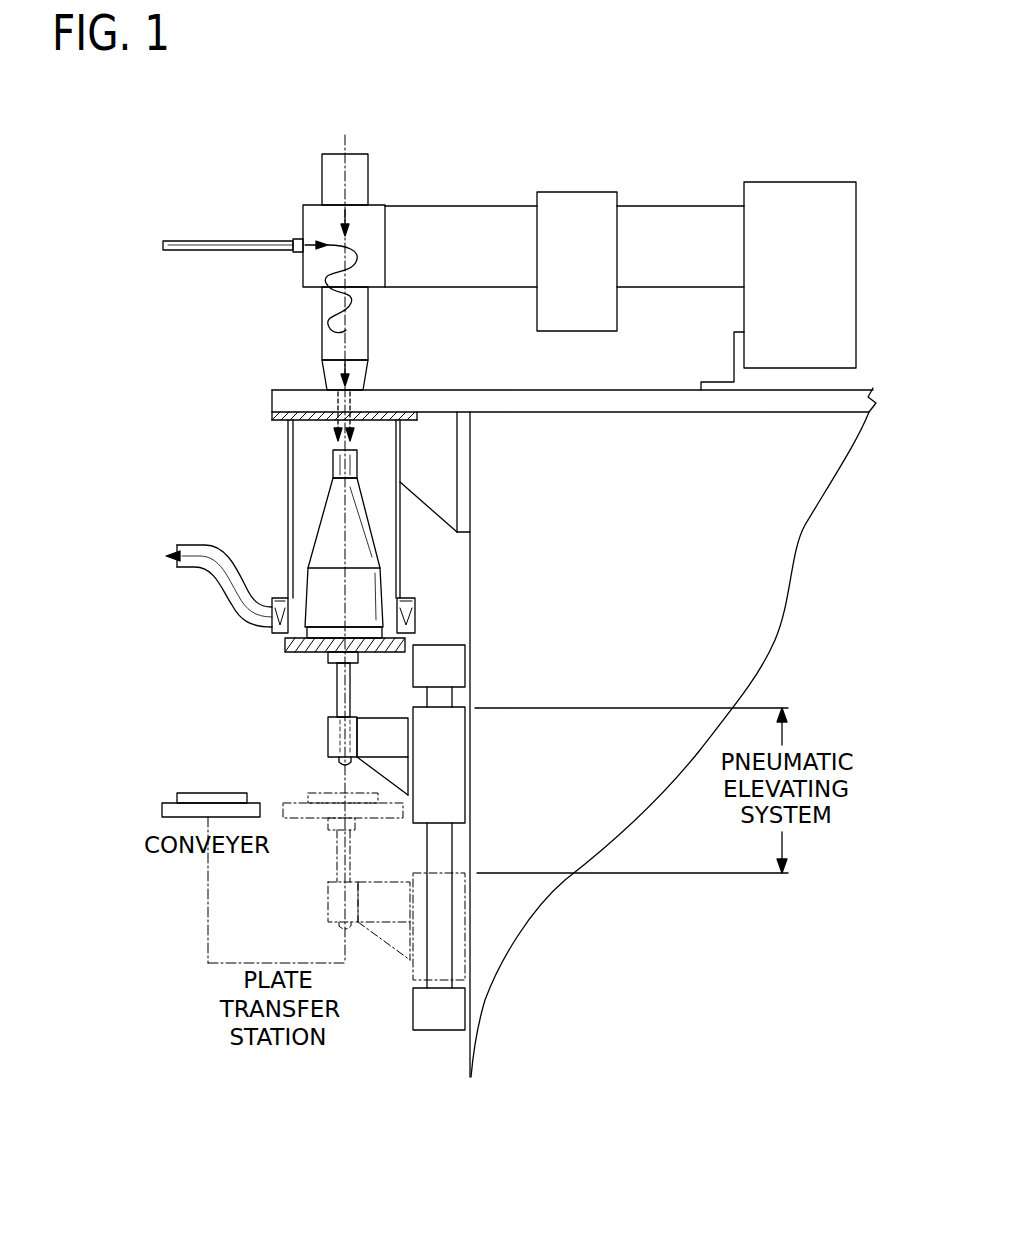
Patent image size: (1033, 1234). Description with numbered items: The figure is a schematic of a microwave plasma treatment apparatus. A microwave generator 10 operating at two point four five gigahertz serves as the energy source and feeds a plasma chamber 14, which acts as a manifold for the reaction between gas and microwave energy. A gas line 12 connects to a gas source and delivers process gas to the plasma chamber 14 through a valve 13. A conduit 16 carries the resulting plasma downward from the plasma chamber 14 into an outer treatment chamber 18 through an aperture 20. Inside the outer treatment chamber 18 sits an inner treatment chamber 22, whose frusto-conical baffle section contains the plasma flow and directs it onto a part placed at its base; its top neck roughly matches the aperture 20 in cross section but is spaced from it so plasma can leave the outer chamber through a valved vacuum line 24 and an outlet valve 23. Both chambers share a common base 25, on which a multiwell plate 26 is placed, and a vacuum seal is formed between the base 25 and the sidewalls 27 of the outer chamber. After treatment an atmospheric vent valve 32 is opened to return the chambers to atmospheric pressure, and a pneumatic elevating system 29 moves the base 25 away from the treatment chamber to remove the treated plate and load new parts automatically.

The microwave generator 10 is at (637, 140).
The gas line 12 is at (212, 240).
The valve 13 is at (302, 237).
The plasma chamber 14 is at (378, 205).
The conduit 16 is at (330, 314).
The outer treatment chamber 18 is at (300, 452).
The aperture 20 is at (340, 405).
The inner treatment chamber 22 is at (328, 511).
The outlet valve 23 is at (282, 598).
The vacuum line 24 is at (230, 603).
The base 25 is at (290, 640).
The multiwell plate 26 is at (305, 656).
The sidewalls 27 is at (290, 528).
The pneumatic elevating system 29 is at (328, 737).
The atmospheric vent valve 32 is at (417, 610).